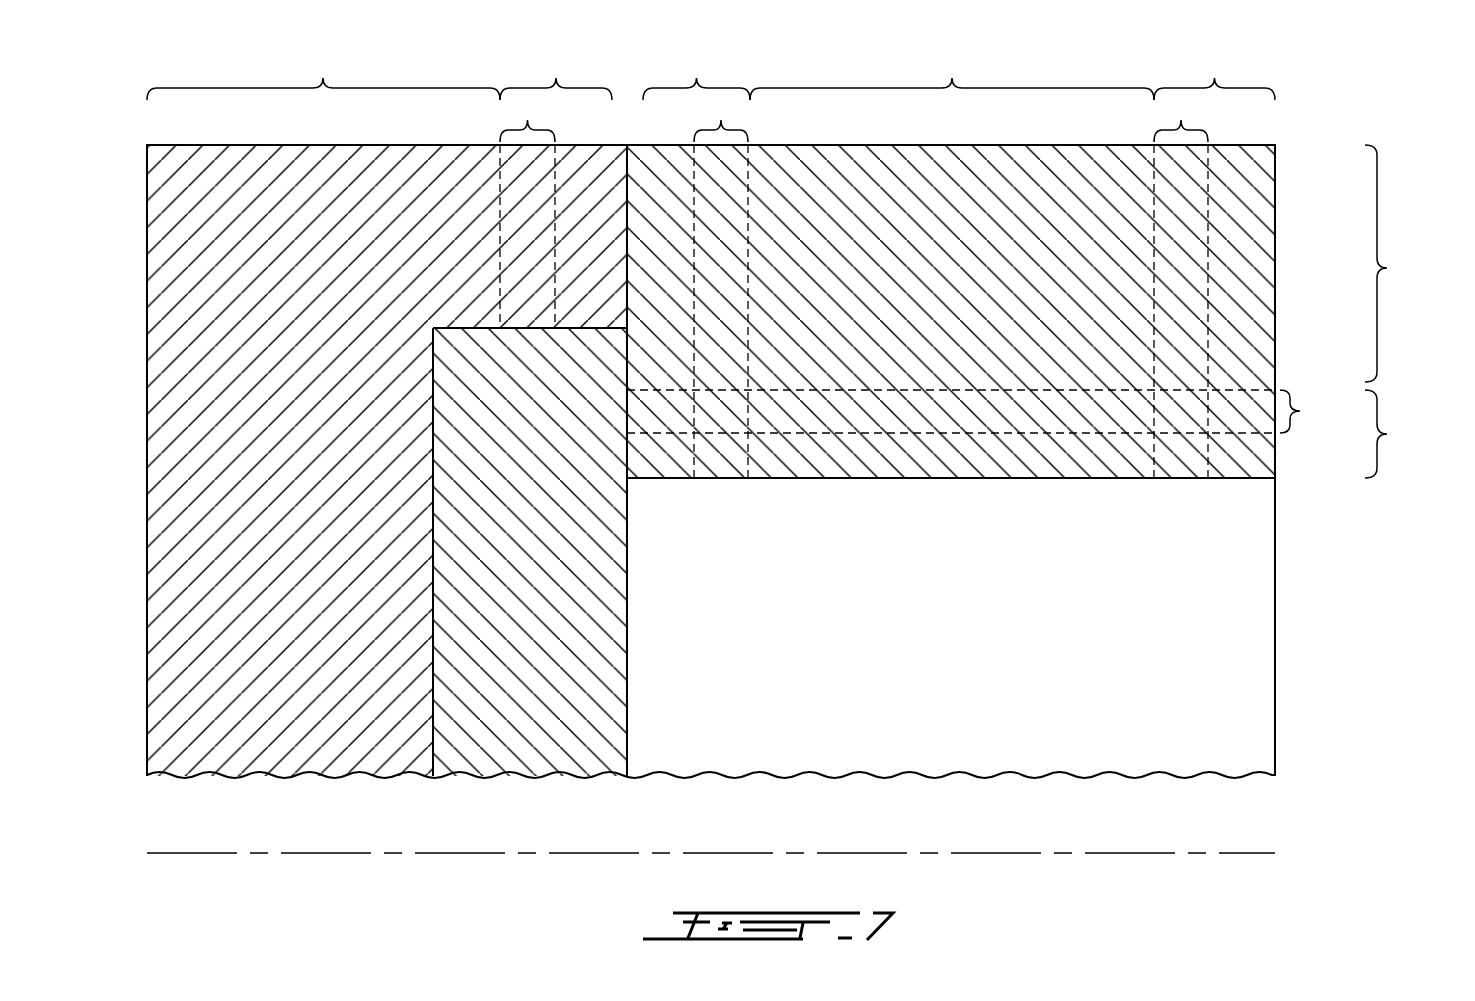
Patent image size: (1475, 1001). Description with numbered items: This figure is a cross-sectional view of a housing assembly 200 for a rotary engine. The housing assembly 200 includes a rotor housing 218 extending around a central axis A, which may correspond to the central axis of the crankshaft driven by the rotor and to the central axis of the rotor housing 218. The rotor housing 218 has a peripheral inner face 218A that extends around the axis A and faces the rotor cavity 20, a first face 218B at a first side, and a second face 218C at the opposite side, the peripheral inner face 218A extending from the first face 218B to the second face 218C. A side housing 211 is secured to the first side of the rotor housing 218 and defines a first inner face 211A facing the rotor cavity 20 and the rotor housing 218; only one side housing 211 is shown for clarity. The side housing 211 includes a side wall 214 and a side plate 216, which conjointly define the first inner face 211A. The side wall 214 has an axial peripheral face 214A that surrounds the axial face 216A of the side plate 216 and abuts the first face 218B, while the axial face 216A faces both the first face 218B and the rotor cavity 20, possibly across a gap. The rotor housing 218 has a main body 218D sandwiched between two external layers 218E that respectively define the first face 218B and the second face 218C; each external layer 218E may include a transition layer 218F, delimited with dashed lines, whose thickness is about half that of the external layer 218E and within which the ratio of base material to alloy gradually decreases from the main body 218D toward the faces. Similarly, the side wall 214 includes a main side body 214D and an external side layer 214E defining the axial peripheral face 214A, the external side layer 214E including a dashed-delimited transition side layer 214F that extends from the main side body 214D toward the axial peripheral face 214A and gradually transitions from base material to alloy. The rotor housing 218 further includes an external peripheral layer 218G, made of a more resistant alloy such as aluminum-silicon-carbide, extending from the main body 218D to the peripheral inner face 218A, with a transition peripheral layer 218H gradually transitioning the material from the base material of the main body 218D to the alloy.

The rotor cavity 20 is at (1222, 628).
The housing assembly 200 is at (1305, 126).
The side housing 211 is at (232, 823).
The first inner face 211A is at (627, 233).
The side wall 214 is at (183, 518).
The axial peripheral face 214A is at (627, 233).
The main side body 214D is at (323, 74).
The external side layer 214E is at (556, 74).
The transition side layer 214F is at (529, 213).
The side plate 216 is at (504, 719).
The axial face 216A is at (627, 372).
The rotor housing 218 is at (1130, 270).
The peripheral inner face 218A is at (1093, 478).
The first face 218B is at (627, 262).
The second face 218C is at (1275, 305).
The main body 218D is at (1101, 216).
The external layers 218E is at (959, 75).
The transition layer 218F is at (952, 288).
The external peripheral layer 218G is at (1408, 434).
The transition peripheral layer 218H is at (994, 411).
The central axis A is at (1133, 855).